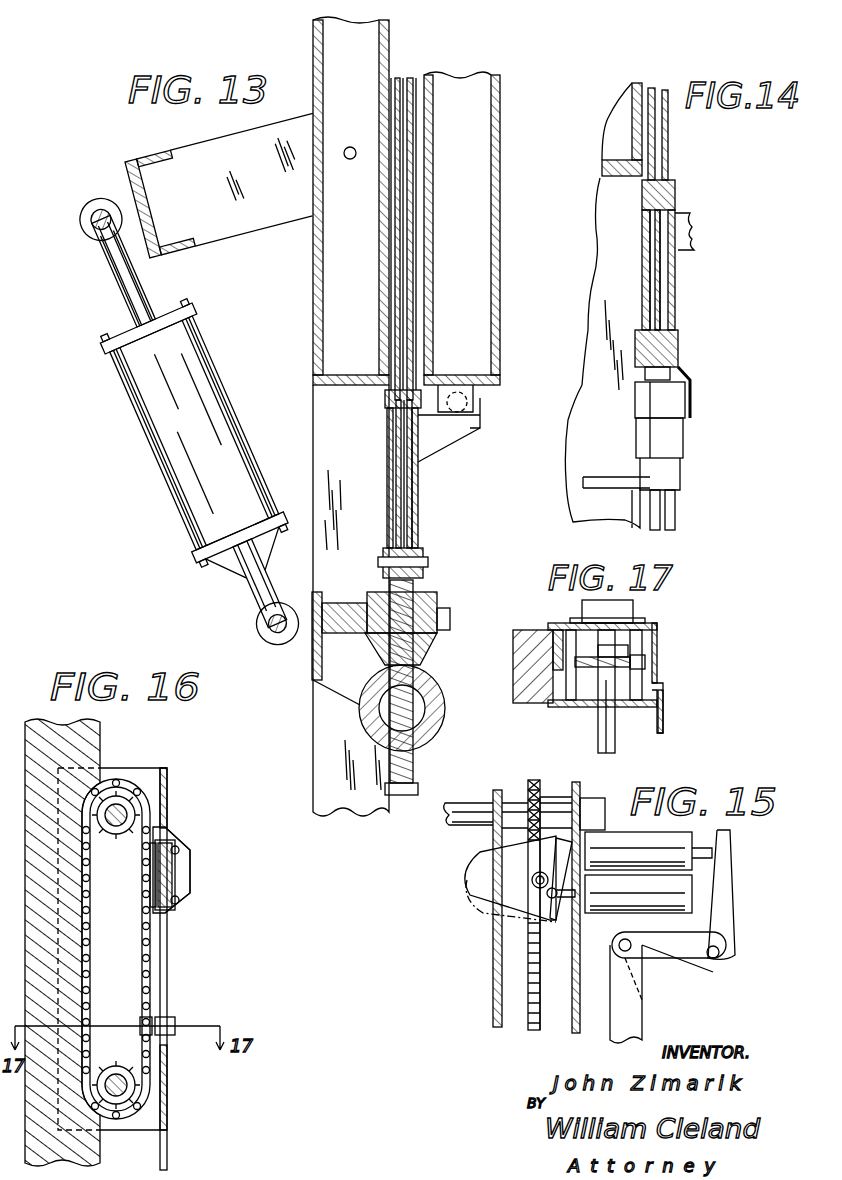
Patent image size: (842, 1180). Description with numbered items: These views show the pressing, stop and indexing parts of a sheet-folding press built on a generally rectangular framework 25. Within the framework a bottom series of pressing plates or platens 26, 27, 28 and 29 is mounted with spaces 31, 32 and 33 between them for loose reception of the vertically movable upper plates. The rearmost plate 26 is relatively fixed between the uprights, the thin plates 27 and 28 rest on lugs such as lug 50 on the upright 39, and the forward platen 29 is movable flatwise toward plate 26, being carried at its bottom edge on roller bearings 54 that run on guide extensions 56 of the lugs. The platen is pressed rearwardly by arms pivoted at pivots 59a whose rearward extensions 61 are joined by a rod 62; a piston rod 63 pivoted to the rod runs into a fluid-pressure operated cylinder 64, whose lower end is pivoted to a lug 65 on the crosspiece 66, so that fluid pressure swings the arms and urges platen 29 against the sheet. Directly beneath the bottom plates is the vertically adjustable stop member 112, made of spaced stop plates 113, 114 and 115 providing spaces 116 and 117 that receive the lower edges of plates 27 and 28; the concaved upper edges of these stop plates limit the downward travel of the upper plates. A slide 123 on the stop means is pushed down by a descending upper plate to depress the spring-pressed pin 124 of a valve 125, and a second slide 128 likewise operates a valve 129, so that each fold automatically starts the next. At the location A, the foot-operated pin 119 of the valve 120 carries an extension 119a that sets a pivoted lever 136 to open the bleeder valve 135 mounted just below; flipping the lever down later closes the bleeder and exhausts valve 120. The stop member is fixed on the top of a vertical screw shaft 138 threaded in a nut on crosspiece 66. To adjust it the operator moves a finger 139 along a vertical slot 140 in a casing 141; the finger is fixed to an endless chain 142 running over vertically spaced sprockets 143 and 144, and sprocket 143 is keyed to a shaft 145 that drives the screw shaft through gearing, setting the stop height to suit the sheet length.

In FIG. 17, the framework 25 is at (526, 714).
In FIG. 16, the framework 25 is at (113, 742).
In FIG. 13, the pressing plate 26 is at (380, 325).
In FIG. 14, the pressing plate 26 is at (632, 130).
In FIG. 13, the pressing plate 27 is at (395, 258).
In FIG. 14, the pressing plate 27 is at (656, 126).
In FIG. 13, the pressing plate 28 is at (413, 280).
In FIG. 14, the pressing plate 28 is at (668, 160).
In FIG. 13, the pressing plate 29 is at (500, 265).
In FIG. 13, the space 31 is at (391, 220).
In FIG. 13, the space 32 is at (415, 222).
In FIG. 13, the space 33 is at (420, 240).
In FIG. 17, the framework upright 39 is at (552, 630).
In FIG. 16, the framework upright 39 is at (103, 760).
In FIG. 13, the lug 50 is at (483, 432).
In FIG. 14, the lug 50 is at (692, 225).
In FIG. 13, the roller bearing 54 is at (482, 410).
In FIG. 13, the guide extension 56 is at (470, 440).
In FIG. 13, the pivot 59a is at (355, 148).
In FIG. 13, the rearward extension 61 is at (205, 148).
In FIG. 13, the rod 62 is at (116, 200).
In FIG. 13, the piston rod 63 is at (120, 268).
In FIG. 13, the fluid-pressure operated cylinder 64 is at (200, 510).
In FIG. 13, the lug 65 is at (292, 640).
In FIG. 13, the crosspiece 66 is at (318, 595).
In FIG. 13, the stop member 112 is at (424, 573).
In FIG. 13, the stop plate 113 is at (397, 466).
In FIG. 14, the stop plate 113 is at (648, 267).
In FIG. 13, the stop plate 114 is at (400, 482).
In FIG. 13, the stop plate 115 is at (418, 498).
In FIG. 14, the stop plate 115 is at (676, 308).
In FIG. 13, the space 116 is at (392, 428).
In FIG. 13, the space 117 is at (418, 435).
In FIG. 15, the pin 119 is at (703, 850).
In FIG. 16, the extension 119a is at (178, 822).
In FIG. 15, the extension 119a is at (568, 848).
In FIG. 16, the valve 120 is at (187, 840).
In FIG. 15, the valve 120 is at (625, 840).
In FIG. 14, the slide 123 is at (658, 292).
In FIG. 14, the spring-pressed pin 124 is at (680, 370).
In FIG. 14, the valve 125 is at (688, 440).
In FIG. 14, the slide 128 is at (676, 186).
In FIG. 14, the valve 129 is at (640, 440).
In FIG. 16, the bleeder valve 135 is at (192, 880).
In FIG. 15, the bleeder valve 135 is at (690, 890).
In FIG. 16, the pivoted lever 136 is at (157, 863).
In FIG. 15, the pivoted lever 136 is at (478, 870).
In FIG. 13, the screw shaft 138 is at (414, 768).
In FIG. 13, the finger 139 is at (435, 658).
In FIG. 17, the finger 139 is at (668, 712).
In FIG. 16, the finger 139 is at (172, 1018).
In FIG. 17, the vertical slot 140 is at (660, 685).
In FIG. 16, the vertical slot 140 is at (170, 977).
In FIG. 17, the casing 141 is at (658, 665).
In FIG. 16, the casing 141 is at (170, 1072).
In FIG. 15, the casing 141 is at (492, 1003).
In FIG. 16, the endless chain 142 is at (160, 960).
In FIG. 15, the endless chain 142 is at (530, 1030).
In FIG. 17, the sprocket 143 is at (625, 655).
In FIG. 16, the sprocket 143 is at (130, 1098).
In FIG. 16, the sprocket 144 is at (130, 805).
In FIG. 15, the sprocket 144 is at (535, 792).
In FIG. 17, the shaft 145 is at (612, 743).
In FIG. 16, the shaft 145 is at (116, 1092).
In FIG. 16, the sheet-indexing mechanism location A is at (168, 1153).